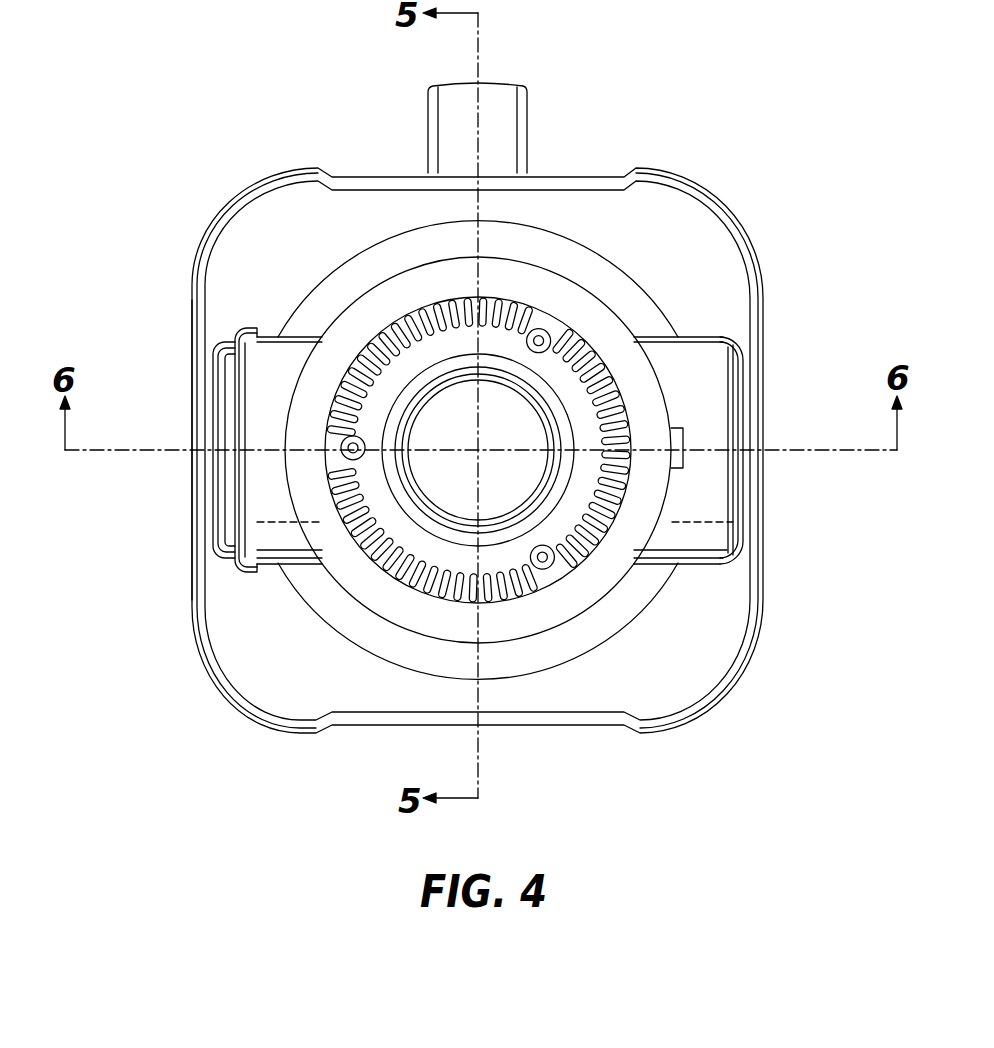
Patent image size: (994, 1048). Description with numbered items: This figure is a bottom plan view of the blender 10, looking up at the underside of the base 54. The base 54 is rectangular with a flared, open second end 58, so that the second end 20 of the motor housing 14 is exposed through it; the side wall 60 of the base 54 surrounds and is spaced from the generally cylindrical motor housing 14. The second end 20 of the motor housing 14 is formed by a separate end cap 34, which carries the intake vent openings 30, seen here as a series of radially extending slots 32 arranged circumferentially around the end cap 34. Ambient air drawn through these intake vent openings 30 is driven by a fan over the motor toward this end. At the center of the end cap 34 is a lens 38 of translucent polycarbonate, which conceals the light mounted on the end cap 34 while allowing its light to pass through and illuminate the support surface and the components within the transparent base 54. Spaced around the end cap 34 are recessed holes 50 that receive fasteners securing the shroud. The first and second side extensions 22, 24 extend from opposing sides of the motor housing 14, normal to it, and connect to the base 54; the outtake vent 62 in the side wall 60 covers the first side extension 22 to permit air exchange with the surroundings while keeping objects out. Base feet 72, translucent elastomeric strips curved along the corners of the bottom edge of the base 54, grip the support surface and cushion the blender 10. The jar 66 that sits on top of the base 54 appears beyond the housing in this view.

The blender 10 is at (271, 99).
The motor housing 14 is at (640, 303).
The second end 20 is at (657, 318).
The first side extension 22 is at (712, 380).
The second side extension 24 is at (247, 413).
The intake vent openings 30 is at (437, 622).
The radially extending slots 32 is at (538, 595).
The end cap 34 is at (367, 593).
The lens 38 is at (432, 417).
The recessed holes 50 is at (560, 560).
The base 54 is at (267, 213).
The second end 58 is at (222, 285).
The side wall 60 is at (197, 332).
The outtake vent 62 is at (740, 412).
The jar 66 is at (430, 140).
The base feet 72 is at (690, 178).